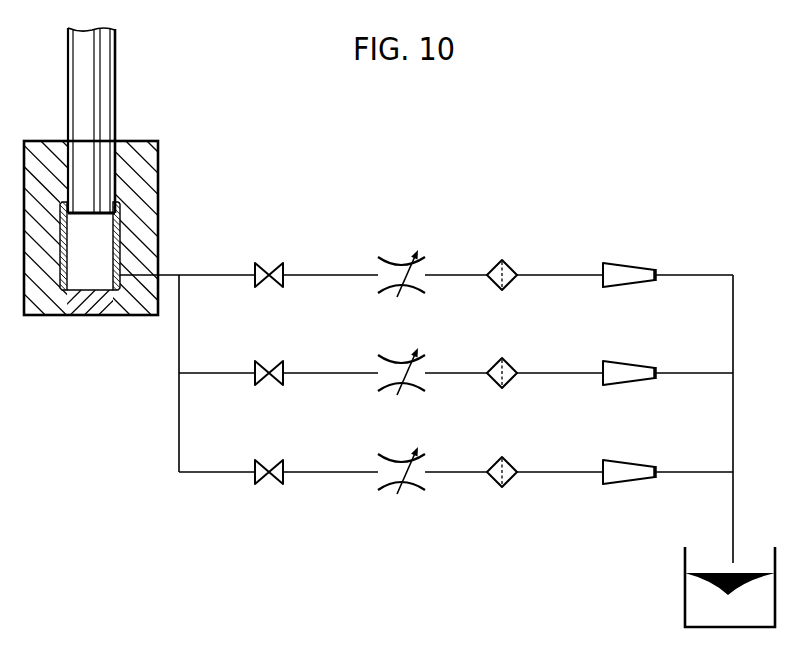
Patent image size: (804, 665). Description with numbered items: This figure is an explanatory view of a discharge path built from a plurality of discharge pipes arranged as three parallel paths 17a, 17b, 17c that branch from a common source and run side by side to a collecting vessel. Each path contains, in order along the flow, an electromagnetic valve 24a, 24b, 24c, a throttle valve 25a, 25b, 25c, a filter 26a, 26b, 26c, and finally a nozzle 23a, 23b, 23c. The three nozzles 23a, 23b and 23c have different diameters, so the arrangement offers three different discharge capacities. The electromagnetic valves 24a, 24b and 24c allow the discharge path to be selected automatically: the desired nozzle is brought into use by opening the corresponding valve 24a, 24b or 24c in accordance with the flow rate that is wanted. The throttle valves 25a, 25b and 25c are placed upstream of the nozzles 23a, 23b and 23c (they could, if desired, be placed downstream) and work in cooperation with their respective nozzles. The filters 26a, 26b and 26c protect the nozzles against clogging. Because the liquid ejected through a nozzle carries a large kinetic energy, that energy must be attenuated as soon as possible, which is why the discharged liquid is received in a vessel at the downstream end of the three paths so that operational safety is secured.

The discharge path 17a is at (426, 262).
The discharge path 17b is at (456, 360).
The discharge path 17c is at (456, 459).
The electromagnetic valve 24a is at (280, 268).
The electromagnetic valve 24b is at (280, 366).
The electromagnetic valve 24c is at (280, 466).
The throttle valve 25a is at (422, 262).
The throttle valve 25b is at (422, 360).
The throttle valve 25c is at (422, 459).
The filter 26a is at (511, 266).
The filter 26b is at (511, 364).
The filter 26c is at (510, 461).
The nozzle 23a is at (630, 268).
The nozzle 23b is at (632, 366).
The nozzle 23c is at (632, 465).